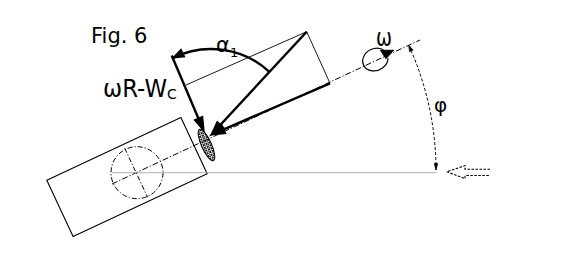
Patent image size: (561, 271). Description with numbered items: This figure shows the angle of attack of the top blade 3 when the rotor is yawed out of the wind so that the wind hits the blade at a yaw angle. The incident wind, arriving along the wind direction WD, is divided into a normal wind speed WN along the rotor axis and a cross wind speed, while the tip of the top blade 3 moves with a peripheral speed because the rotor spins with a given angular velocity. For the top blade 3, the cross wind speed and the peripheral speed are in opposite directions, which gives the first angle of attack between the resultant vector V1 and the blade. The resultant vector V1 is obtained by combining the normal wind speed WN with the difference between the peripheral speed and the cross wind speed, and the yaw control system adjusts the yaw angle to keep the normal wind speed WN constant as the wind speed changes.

The top blade 3 is at (223, 147).
The resultant vector V1 is at (259, 83).
The normal wind speed WN is at (270, 113).
The feed direction of the workpiece WD is at (469, 186).